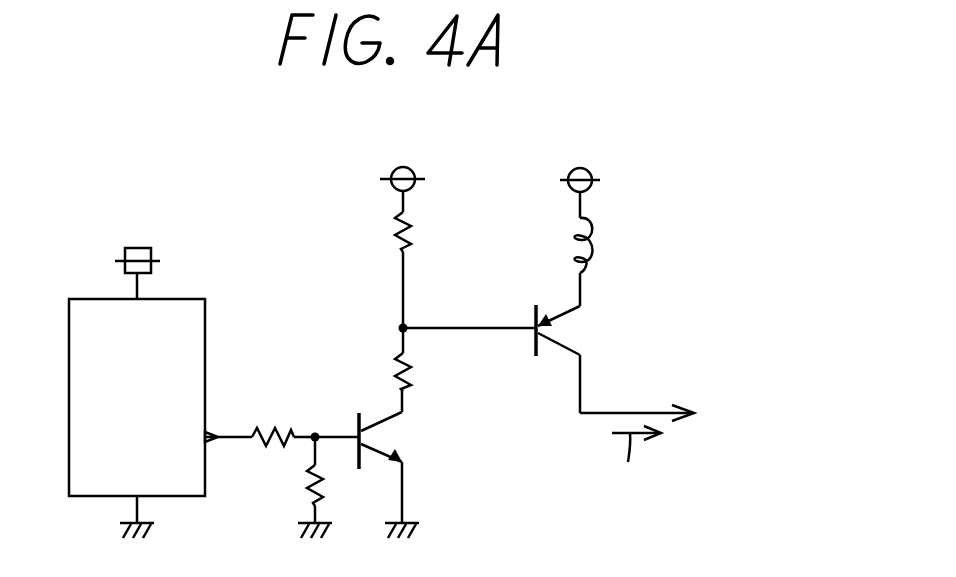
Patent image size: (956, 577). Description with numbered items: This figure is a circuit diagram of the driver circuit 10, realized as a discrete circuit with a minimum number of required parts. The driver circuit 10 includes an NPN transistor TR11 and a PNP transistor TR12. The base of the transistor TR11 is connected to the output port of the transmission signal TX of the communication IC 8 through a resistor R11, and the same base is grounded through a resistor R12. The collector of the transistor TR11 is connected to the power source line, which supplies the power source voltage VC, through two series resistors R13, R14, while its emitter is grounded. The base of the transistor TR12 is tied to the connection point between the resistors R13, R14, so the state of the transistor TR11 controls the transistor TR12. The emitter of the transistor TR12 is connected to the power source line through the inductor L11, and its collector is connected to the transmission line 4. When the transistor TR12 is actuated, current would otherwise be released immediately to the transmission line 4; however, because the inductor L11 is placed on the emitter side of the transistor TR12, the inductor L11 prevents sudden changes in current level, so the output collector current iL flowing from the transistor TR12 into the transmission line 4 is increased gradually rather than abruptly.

The communication IC 8 is at (81, 298).
The driver circuit 10 is at (318, 207).
The transmission line 4 is at (617, 412).
The resistor R11 is at (296, 416).
The resistor R12 is at (303, 484).
The resistor R13 is at (393, 234).
The resistor R14 is at (393, 374).
The NPN transistor TR11 is at (380, 438).
The PNP transistor TR12 is at (567, 330).
The inductor L11 is at (595, 237).